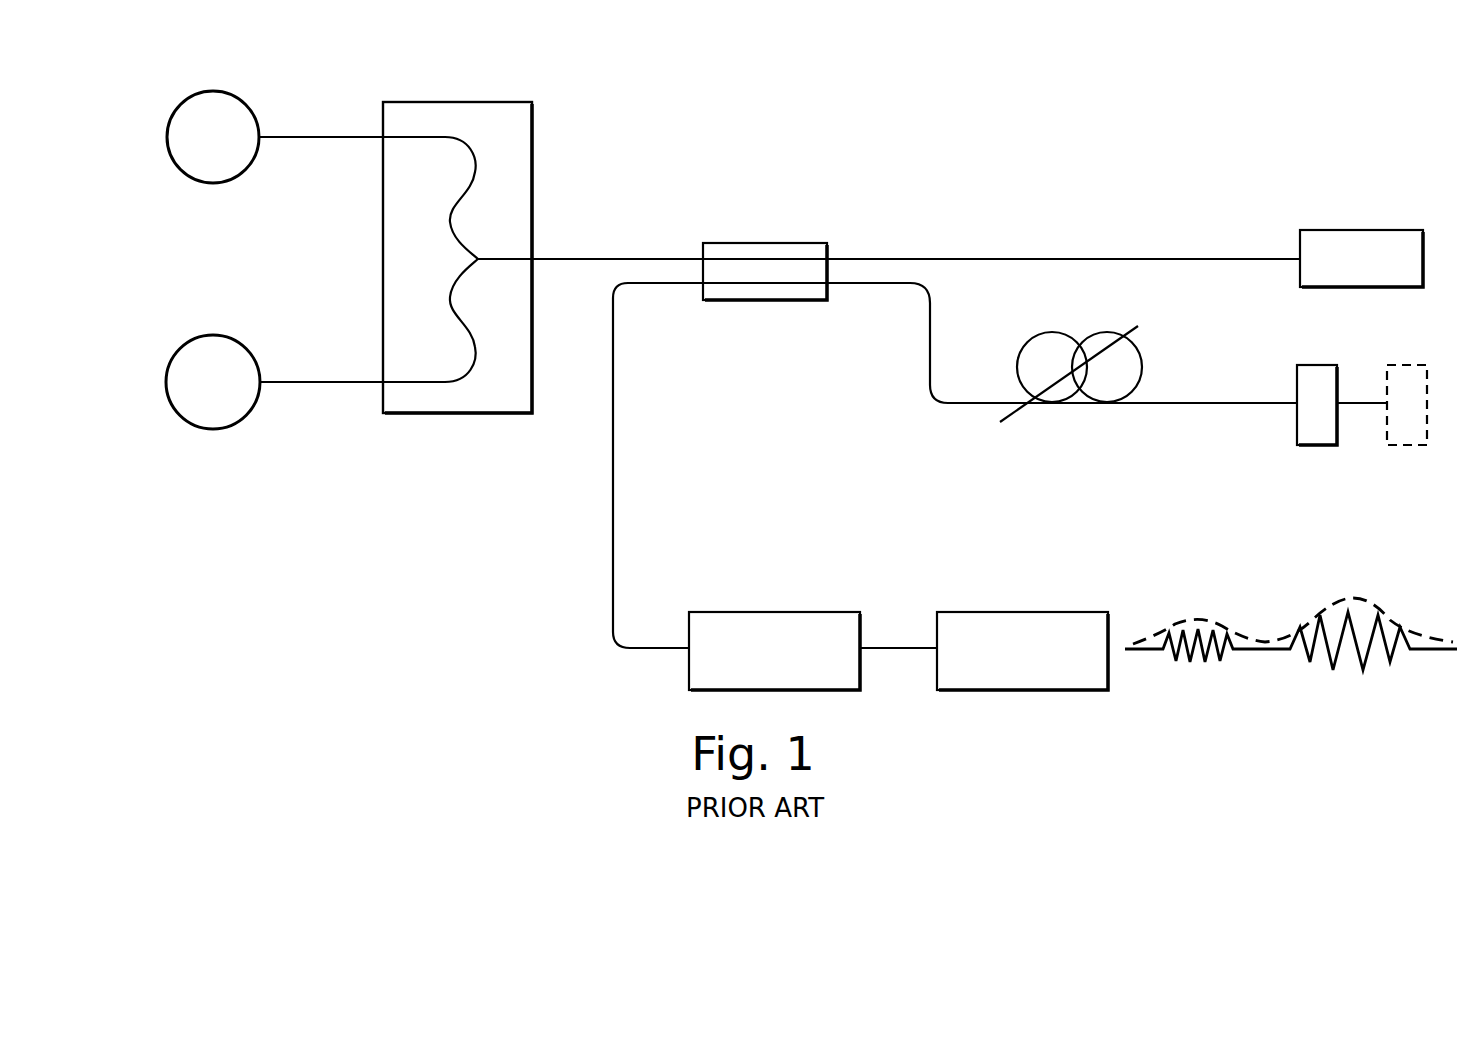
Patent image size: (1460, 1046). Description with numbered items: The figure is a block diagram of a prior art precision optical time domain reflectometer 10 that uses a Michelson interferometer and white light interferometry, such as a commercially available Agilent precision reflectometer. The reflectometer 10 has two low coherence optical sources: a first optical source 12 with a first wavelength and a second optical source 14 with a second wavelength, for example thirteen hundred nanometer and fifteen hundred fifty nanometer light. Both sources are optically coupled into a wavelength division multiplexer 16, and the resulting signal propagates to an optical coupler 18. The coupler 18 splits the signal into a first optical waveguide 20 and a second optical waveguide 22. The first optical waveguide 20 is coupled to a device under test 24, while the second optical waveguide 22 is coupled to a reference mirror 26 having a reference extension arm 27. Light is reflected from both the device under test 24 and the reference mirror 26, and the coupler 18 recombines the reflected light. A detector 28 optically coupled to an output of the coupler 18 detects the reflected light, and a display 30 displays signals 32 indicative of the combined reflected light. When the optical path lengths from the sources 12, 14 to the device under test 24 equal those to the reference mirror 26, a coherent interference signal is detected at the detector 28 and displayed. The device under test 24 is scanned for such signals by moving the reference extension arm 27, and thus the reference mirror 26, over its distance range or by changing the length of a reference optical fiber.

The precision optical time domain reflectometer 10 is at (872, 100).
The first optical source 12 is at (187, 181).
The second optical source 14 is at (187, 426).
The wavelength division multiplexer 16 is at (424, 417).
The optical coupler 18 is at (781, 302).
The first optical waveguide 20 is at (947, 257).
The second optical waveguide 22 is at (931, 397).
The device under test 24 is at (1365, 228).
The reference mirror 26 is at (1360, 378).
The reference extension arm 27 is at (1102, 331).
The detector 28 is at (793, 610).
The display 30 is at (1020, 610).
The signals 32 is at (1386, 618).